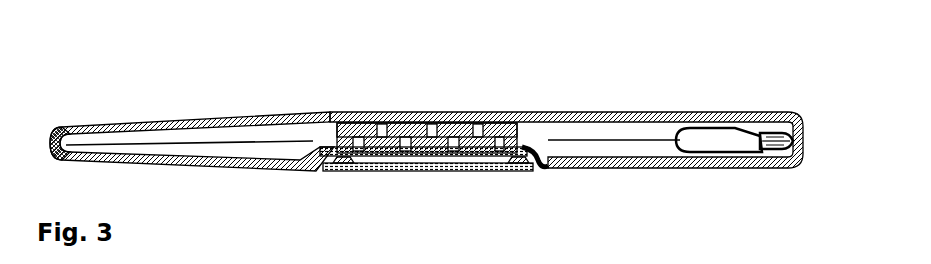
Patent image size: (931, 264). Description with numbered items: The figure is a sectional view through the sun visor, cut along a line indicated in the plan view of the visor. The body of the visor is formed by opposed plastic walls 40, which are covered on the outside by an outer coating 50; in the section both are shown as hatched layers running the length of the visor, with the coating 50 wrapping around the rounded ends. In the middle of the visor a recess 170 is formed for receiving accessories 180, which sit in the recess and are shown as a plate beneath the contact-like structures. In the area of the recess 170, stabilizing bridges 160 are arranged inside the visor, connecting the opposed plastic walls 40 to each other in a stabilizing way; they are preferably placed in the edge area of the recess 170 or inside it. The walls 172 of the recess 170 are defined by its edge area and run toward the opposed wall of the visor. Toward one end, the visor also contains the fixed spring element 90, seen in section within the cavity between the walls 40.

The plastic walls 40 is at (103, 125).
The outer coating 50 is at (204, 114).
The fixed spring element 90 is at (748, 131).
The stabilizing bridges 160 is at (411, 124).
The recess 170 is at (430, 156).
The walls of the recess 172 is at (547, 166).
The accessories 180 is at (360, 174).